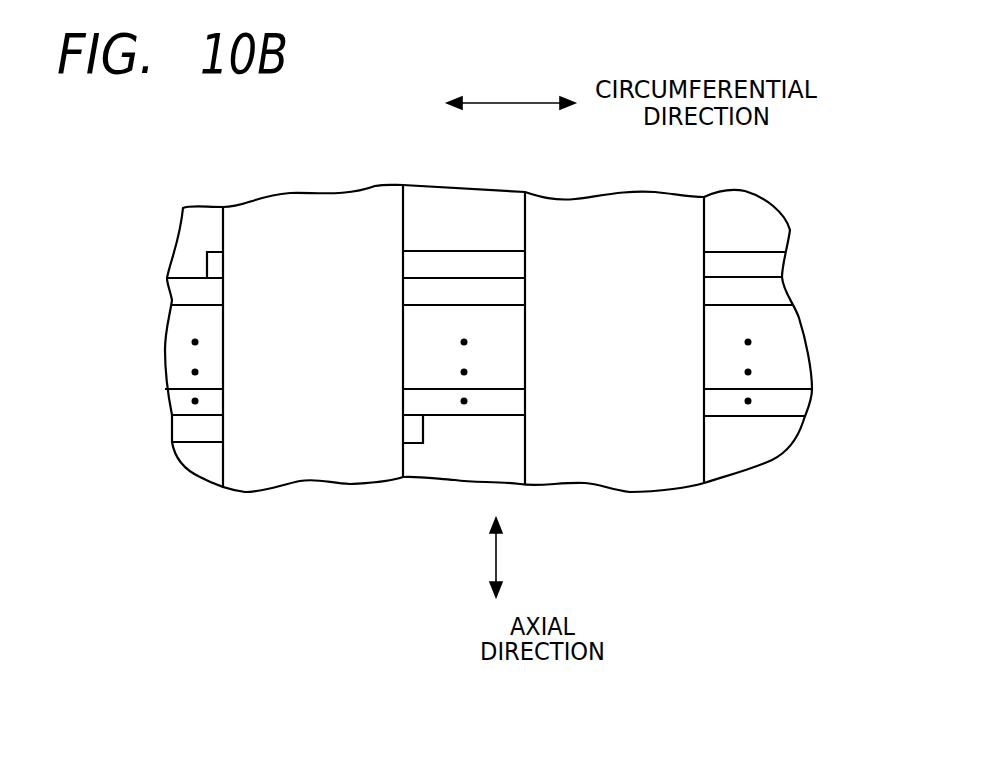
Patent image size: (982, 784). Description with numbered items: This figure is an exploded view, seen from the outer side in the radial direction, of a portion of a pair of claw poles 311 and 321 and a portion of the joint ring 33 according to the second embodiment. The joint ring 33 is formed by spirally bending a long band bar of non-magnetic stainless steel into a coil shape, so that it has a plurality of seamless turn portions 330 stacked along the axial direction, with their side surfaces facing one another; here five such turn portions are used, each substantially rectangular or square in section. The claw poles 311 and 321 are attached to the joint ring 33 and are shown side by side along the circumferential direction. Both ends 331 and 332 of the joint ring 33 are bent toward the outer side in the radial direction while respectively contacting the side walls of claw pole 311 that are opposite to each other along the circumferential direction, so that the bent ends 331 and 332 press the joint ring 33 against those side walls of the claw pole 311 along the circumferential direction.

The joint ring 33 is at (465, 236).
The claw pole 311 is at (291, 462).
The claw pole 321 is at (685, 473).
The turn portion 330 is at (199, 427).
The end of the joint ring 331 is at (217, 263).
The end of the joint ring 332 is at (413, 429).